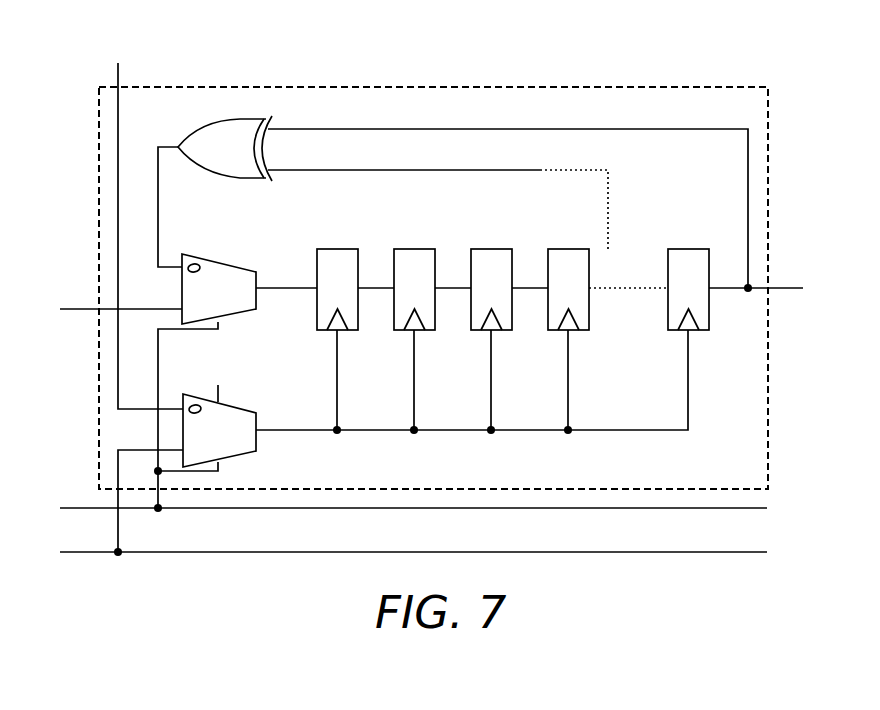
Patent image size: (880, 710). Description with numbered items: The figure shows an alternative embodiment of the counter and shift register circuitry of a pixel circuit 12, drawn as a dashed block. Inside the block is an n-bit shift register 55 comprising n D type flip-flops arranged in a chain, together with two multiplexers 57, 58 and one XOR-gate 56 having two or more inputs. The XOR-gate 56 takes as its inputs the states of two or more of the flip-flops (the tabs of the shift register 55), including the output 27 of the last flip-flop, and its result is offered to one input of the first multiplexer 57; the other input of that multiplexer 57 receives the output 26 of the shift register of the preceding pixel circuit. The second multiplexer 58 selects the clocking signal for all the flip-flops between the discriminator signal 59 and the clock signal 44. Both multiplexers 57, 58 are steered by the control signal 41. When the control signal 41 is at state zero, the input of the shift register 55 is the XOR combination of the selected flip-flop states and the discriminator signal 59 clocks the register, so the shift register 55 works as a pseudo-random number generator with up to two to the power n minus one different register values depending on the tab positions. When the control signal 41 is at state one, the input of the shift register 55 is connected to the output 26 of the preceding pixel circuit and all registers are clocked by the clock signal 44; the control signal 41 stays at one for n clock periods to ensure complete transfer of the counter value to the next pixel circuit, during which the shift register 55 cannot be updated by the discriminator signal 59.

The pixel circuit 12 is at (757, 116).
The discriminator signal 59 is at (118, 76).
The XOR-gate 56 is at (229, 177).
The multiplexer 57 is at (254, 312).
The multiplexer 58 is at (250, 410).
The n-bit shift register 55 is at (688, 233).
The output of the shift register of the preceding pixel circuit 26 is at (78, 309).
The output of the shift register 27 is at (788, 288).
The control signal 41 is at (799, 523).
The clock signal 44 is at (799, 568).